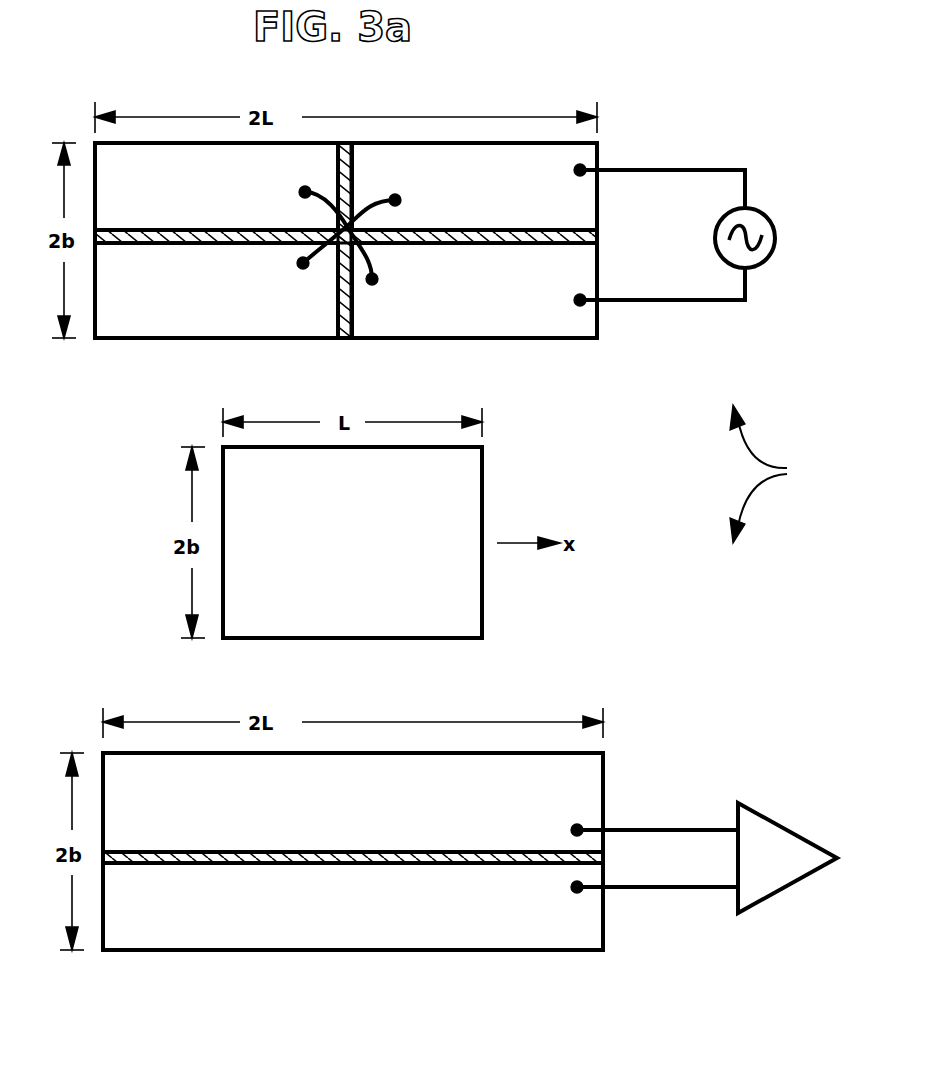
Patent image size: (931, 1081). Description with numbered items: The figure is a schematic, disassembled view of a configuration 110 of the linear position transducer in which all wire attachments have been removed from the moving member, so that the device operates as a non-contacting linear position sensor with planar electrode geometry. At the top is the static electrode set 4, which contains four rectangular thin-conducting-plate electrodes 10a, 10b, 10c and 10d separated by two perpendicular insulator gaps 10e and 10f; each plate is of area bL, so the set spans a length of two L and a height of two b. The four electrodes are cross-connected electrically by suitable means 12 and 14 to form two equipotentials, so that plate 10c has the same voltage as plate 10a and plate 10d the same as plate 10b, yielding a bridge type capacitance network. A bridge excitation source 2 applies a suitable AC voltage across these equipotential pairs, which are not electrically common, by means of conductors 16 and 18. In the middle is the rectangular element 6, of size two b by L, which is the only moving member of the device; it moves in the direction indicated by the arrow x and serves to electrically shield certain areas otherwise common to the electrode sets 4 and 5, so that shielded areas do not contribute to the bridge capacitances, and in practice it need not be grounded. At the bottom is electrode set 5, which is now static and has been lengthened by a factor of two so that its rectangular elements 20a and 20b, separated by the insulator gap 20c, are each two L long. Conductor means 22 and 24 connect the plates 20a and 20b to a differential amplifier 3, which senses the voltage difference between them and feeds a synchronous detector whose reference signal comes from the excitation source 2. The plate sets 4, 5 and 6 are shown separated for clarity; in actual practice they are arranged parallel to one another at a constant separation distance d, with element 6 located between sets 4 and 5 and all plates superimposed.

The bridge excitation source 2 is at (777, 232).
The differential amplifier 3 is at (787, 858).
The static electrode set 4 is at (158, 352).
The electrode set 5 is at (258, 960).
The rectangular element 6 is at (352, 542).
The rectangular element 10a is at (474, 186).
The rectangular element 10b is at (216, 186).
The rectangular element 10c is at (216, 290).
The rectangular element 10d is at (474, 290).
The insulator gap 10e is at (598, 237).
The insulator gap 10f is at (345, 339).
The cross-connecting means 12 is at (368, 202).
The cross-connecting means 14 is at (368, 255).
The conductor 16 is at (642, 302).
The conductor 18 is at (640, 168).
The rectangular element 20a is at (353, 802).
The rectangular element 20b is at (353, 906).
The insulator gap 20c is at (605, 861).
The conductor means 22 is at (641, 829).
The conductor means 24 is at (643, 888).
The configuration 110 is at (785, 474).